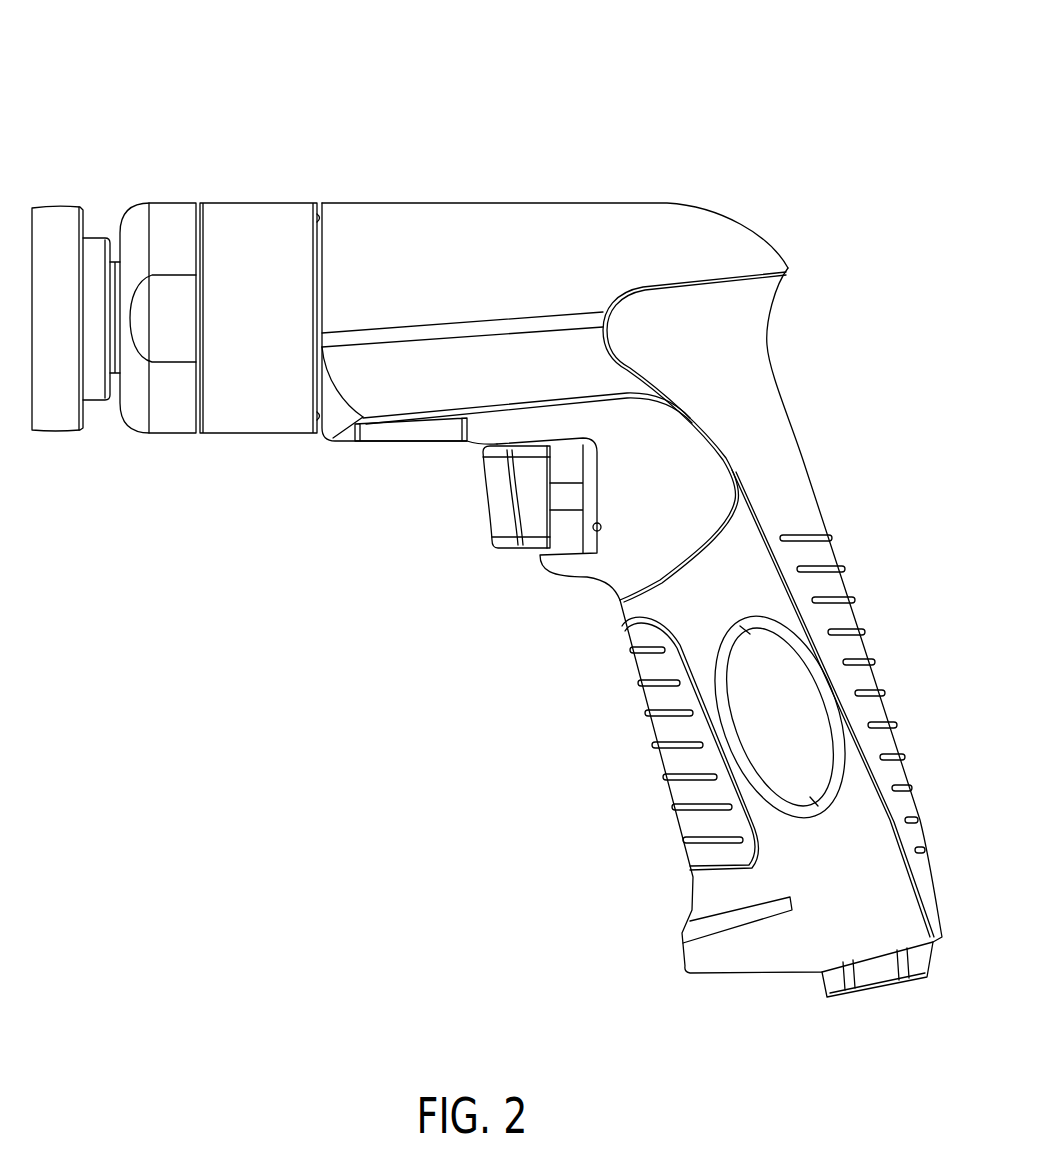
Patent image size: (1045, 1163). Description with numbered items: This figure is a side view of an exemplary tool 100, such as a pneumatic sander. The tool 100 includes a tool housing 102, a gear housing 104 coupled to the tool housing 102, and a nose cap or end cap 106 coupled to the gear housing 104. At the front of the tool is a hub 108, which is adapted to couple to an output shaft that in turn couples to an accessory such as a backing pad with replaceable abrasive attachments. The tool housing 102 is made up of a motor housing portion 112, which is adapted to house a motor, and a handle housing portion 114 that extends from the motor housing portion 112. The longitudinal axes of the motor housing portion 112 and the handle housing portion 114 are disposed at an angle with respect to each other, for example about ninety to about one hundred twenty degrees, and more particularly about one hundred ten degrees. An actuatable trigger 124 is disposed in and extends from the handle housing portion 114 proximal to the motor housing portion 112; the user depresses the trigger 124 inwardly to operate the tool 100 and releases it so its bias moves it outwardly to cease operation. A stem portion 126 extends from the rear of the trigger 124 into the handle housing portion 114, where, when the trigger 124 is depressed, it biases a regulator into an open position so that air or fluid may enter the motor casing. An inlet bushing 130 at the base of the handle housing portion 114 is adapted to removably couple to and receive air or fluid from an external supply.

The tool 100 is at (776, 83).
The tool housing 102 is at (670, 200).
The gear housing 104 is at (285, 210).
The nose cap or end cap 106 is at (182, 210).
The hub 108 is at (67, 215).
The motor housing portion 112 is at (541, 212).
The handle housing portion 114 is at (840, 583).
The trigger 124 is at (502, 495).
The stem portion 126 is at (568, 505).
The inlet bushing 130 is at (873, 977).